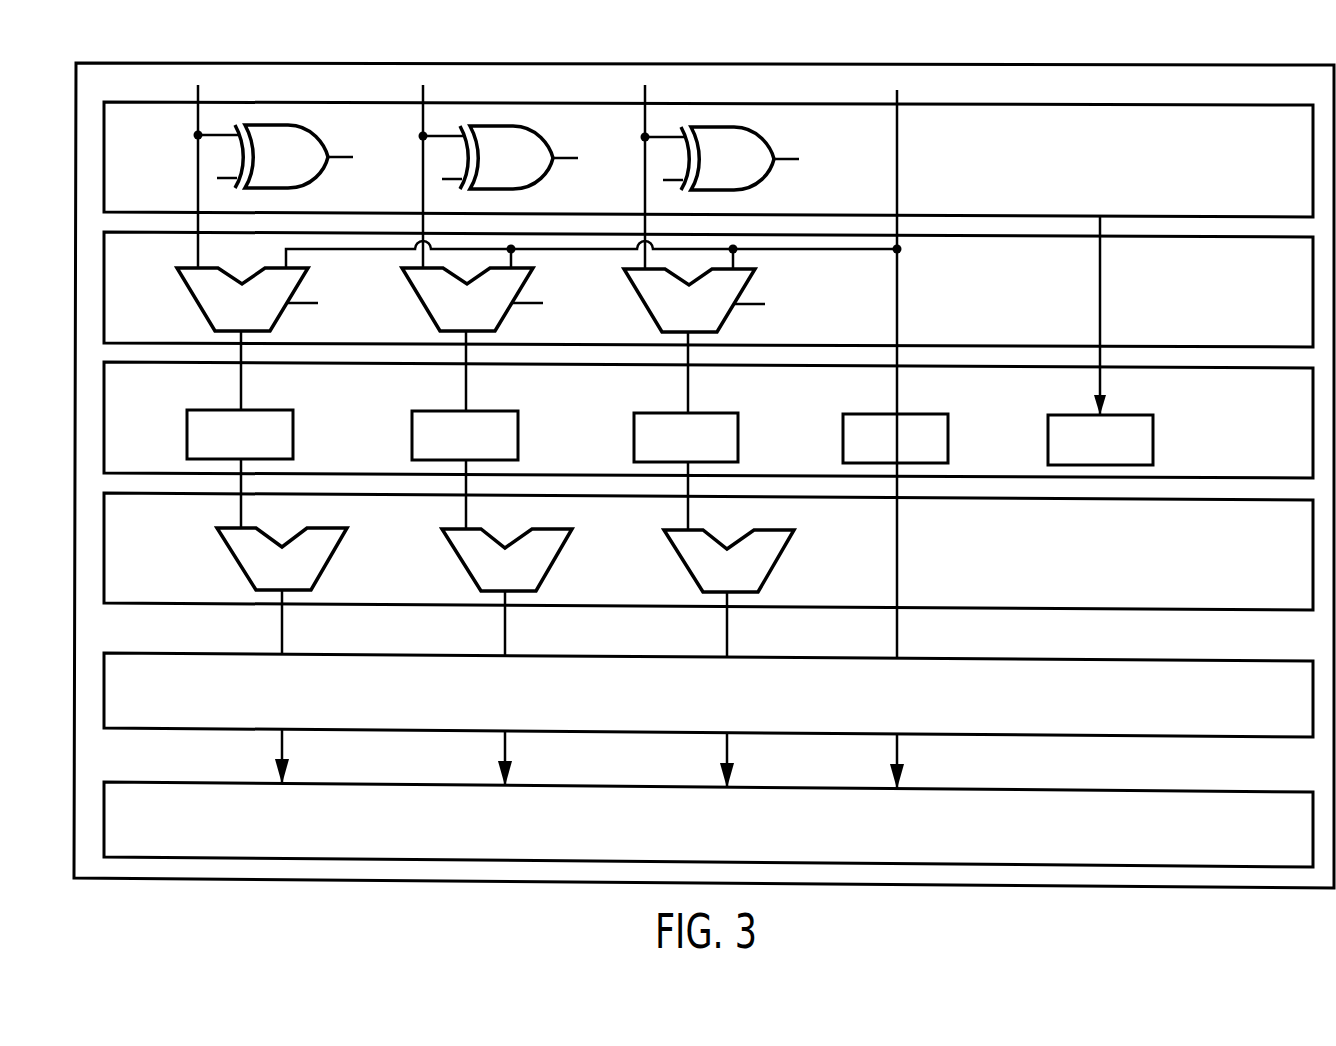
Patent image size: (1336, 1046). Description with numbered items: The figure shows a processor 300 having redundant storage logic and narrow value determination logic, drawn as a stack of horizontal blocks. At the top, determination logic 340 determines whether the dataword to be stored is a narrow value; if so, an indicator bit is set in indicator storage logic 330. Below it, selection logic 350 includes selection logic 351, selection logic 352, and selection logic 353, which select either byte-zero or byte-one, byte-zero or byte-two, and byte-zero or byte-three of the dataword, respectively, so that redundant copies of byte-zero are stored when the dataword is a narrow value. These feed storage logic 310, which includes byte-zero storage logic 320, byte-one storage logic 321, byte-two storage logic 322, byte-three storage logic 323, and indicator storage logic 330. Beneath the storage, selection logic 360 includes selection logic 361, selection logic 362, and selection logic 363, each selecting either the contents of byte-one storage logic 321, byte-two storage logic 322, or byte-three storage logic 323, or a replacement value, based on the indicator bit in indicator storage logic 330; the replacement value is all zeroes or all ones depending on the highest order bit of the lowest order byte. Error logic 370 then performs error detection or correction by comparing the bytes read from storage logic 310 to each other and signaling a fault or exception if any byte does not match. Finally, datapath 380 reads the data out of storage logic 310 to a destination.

The processor 300 is at (1013, 888).
The storage logic 310 is at (1263, 468).
The byte-0 storage logic 320 is at (916, 452).
The byte-1 storage logic 321 is at (706, 451).
The byte-2 storage logic 322 is at (485, 449).
The byte-3 storage logic 323 is at (260, 448).
The indicator storage logic 330 is at (1120, 453).
The determination logic 340 is at (1252, 207).
The selection logic 350 is at (1263, 335).
The selection logic 351 is at (709, 319).
The selection logic 352 is at (487, 318).
The selection logic 353 is at (262, 317).
The selection logic 360 is at (1263, 598).
The selection logic 361 is at (748, 582).
The selection logic 362 is at (526, 581).
The selection logic 363 is at (303, 580).
The error logic 370 is at (1262, 728).
The datapath 380 is at (1262, 857).